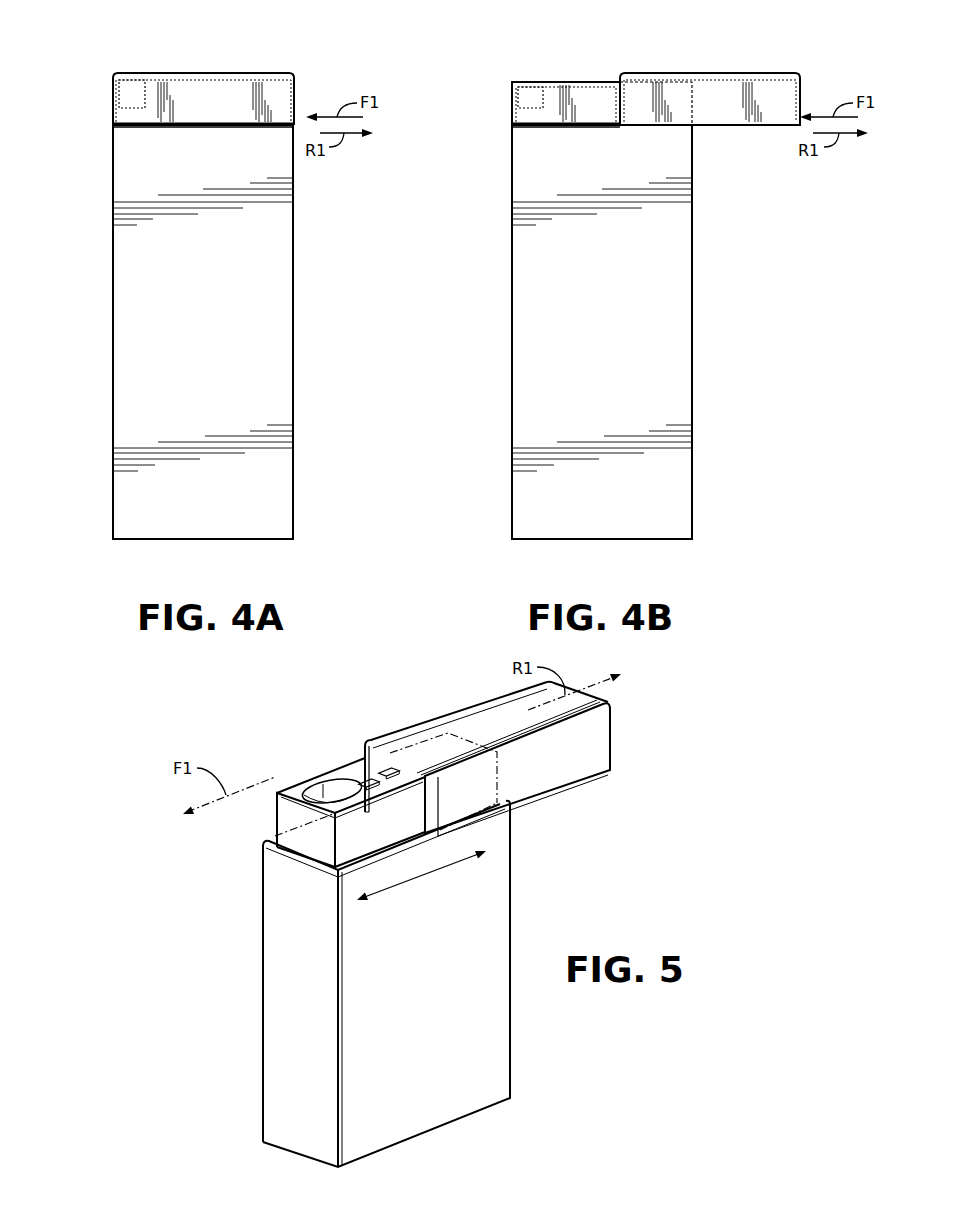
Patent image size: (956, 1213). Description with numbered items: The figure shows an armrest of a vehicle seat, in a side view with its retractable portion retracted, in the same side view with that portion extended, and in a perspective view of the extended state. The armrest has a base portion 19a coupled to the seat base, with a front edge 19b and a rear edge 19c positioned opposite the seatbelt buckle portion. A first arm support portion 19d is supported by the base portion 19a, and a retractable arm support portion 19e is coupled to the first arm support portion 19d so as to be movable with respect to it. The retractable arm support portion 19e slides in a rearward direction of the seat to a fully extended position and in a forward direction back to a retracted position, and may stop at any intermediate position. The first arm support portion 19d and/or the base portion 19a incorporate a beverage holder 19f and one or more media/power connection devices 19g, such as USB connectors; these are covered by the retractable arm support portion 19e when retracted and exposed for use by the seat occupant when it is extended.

In FIG. 4A, the base portion 19a is at (143, 491).
In FIG. 4B, the base portion 19a is at (537, 491).
In FIG. 5, the base portion 19a is at (262, 913).
In FIG. 4A, the front edge 19b is at (113, 308).
In FIG. 4B, the front edge 19b is at (512, 308).
In FIG. 5, the front edge 19b is at (297, 1045).
In FIG. 4A, the rear edge 19c is at (293, 456).
In FIG. 4B, the rear edge 19c is at (692, 456).
In FIG. 5, the rear edge 19c is at (510, 1005).
In FIG. 4B, the first arm support portion 19d is at (552, 82).
In FIG. 5, the first arm support portion 19d is at (365, 763).
In FIG. 4A, the retractable arm support portion 19e is at (213, 73).
In FIG. 4B, the retractable arm support portion 19e is at (776, 73).
In FIG. 5, the retractable arm support portion 19e is at (483, 703).
In FIG. 4A, the beverage holder 19f is at (133, 98).
In FIG. 4B, the beverage holder 19f is at (533, 98).
In FIG. 5, the beverage holder 19f is at (333, 785).
In FIG. 5, the media/power connection devices 19g is at (388, 770).